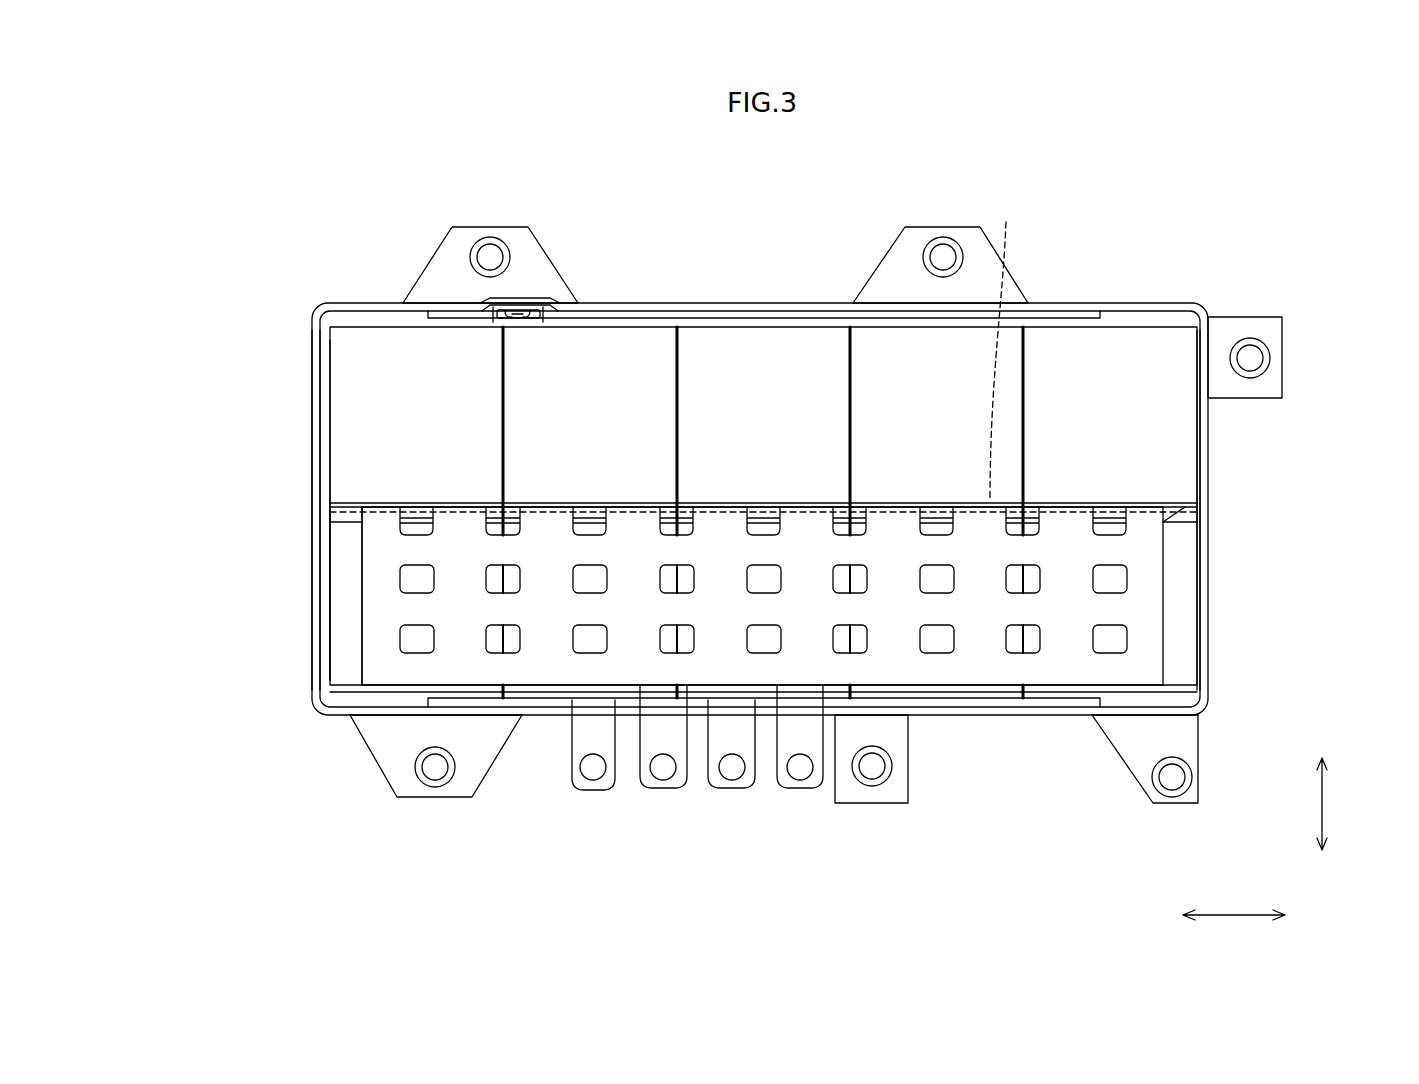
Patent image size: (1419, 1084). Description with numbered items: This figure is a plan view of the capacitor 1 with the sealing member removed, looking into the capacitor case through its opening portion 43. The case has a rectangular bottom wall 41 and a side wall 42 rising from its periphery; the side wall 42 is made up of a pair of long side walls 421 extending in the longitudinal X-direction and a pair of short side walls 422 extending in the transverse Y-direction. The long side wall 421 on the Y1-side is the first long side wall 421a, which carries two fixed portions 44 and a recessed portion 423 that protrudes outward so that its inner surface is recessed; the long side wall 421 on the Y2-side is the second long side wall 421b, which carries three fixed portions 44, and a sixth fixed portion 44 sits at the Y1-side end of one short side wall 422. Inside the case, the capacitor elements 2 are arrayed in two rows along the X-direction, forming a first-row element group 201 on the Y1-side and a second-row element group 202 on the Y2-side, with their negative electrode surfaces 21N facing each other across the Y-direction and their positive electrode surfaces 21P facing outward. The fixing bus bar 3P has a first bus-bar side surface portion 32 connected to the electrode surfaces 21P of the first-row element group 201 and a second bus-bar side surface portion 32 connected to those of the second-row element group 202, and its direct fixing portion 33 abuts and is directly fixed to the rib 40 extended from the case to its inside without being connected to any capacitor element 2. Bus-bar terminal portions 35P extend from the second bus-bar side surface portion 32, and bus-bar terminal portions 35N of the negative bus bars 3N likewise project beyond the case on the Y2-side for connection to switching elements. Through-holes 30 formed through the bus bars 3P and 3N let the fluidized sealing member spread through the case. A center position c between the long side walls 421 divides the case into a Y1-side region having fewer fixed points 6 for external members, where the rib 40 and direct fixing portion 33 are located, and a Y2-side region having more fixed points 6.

The capacitor 1 is at (1118, 144).
The capacitor element 2 is at (708, 347).
The negative bus bar 3N is at (345, 660).
The fixing bus bar 3P is at (577, 740).
The fixed point 6 is at (462, 254).
The electrode surface 21N is at (745, 503).
The electrode surface 21P is at (760, 340).
The through-hole 30 is at (400, 525).
The bus-bar side surface portion 32 is at (830, 322).
The direct fixing portion 33 is at (530, 310).
The bus-bar terminal portion 35N is at (683, 790).
The bus-bar terminal portion 35P is at (612, 792).
The rib 40 is at (503, 330).
The bottom wall 41 is at (324, 395).
The side wall 42 is at (312, 462).
The opening portion 43 is at (338, 430).
The fixed portion 44 is at (470, 227).
The first-row element group 201 is at (322, 363).
The second-row element group 202 is at (333, 579).
The long side wall 421 is at (775, 510).
The first long side wall 421a is at (1122, 310).
The second long side wall 421b is at (1015, 718).
The short side wall 422 is at (395, 606).
The recessed portion 423 is at (518, 318).
The center position c is at (1001, 345).